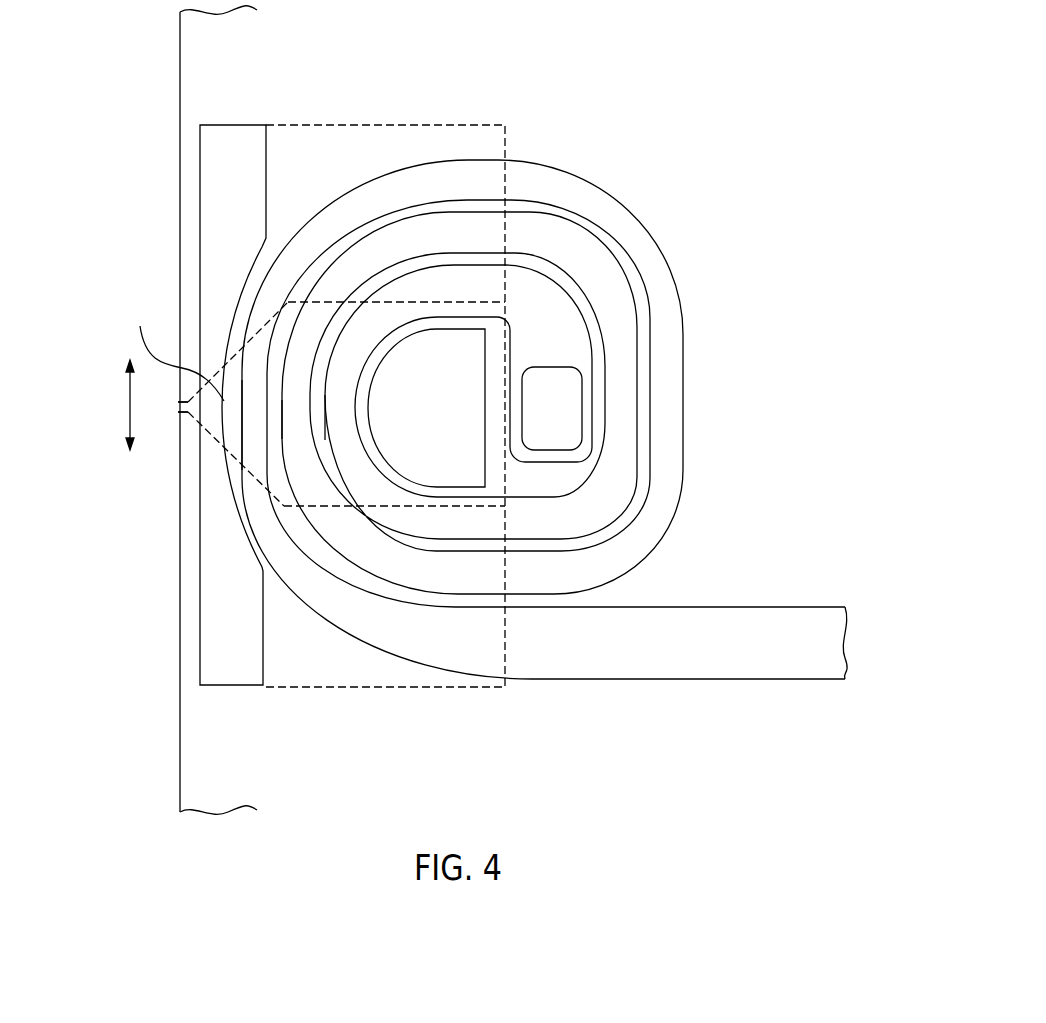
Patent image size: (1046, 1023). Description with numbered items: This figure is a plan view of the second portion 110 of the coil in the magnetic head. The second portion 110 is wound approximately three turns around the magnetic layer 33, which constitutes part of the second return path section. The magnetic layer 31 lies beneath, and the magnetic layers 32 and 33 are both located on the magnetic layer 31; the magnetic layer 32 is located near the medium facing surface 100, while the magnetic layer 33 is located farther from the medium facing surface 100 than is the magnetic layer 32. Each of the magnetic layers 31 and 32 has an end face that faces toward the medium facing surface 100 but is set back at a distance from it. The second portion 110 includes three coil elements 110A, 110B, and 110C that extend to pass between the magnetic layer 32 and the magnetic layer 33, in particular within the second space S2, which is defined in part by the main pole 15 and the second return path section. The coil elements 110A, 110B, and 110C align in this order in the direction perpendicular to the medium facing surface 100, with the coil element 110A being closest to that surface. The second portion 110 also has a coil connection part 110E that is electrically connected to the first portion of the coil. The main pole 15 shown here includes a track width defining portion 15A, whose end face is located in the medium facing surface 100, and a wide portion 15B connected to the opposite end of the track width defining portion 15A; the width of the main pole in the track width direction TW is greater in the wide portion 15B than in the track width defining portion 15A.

The medium facing surface 100 is at (177, 58).
The magnetic layer 32 is at (250, 125).
The magnetic layer 31 is at (383, 125).
The magnetic layer 33 is at (448, 367).
The main pole 15 is at (70, 455).
The track width defining portion 15A is at (187, 413).
The wide portion 15B is at (216, 415).
The second portion of the coil 110 is at (602, 193).
The coil element 110A is at (247, 407).
The coil element 110B is at (295, 408).
The coil element 110C is at (340, 408).
The coil connection part 110E is at (545, 442).
The second space S2 is at (226, 405).
The track width direction TW is at (113, 405).